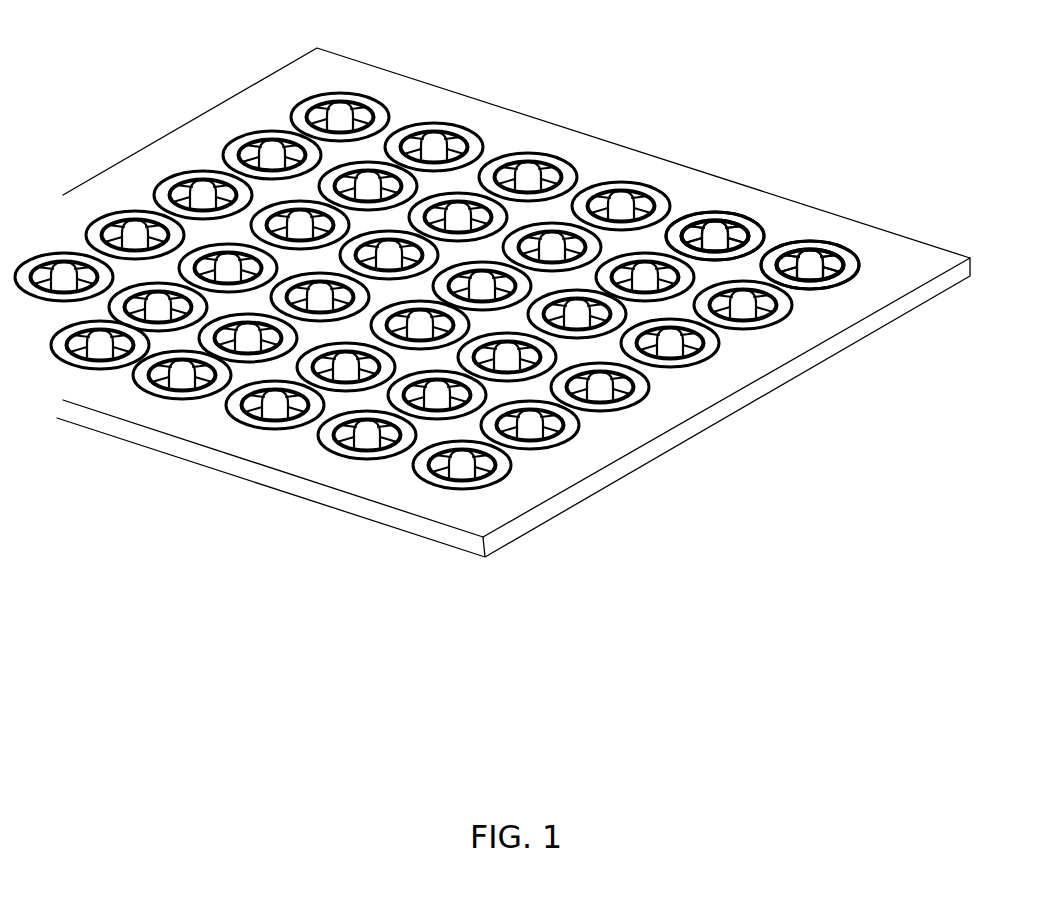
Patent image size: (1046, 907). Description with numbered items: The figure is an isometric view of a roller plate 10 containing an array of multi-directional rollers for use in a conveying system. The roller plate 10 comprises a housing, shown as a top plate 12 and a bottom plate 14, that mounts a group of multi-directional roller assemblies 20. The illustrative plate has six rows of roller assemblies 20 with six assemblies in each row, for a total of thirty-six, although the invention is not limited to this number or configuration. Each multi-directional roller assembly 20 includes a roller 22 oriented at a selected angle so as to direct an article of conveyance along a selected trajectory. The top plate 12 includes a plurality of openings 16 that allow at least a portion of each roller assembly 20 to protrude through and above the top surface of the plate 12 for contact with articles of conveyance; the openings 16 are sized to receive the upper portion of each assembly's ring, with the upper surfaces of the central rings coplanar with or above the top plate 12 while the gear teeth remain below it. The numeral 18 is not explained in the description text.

The roller plate 10 is at (728, 118).
The top plate 12 is at (913, 252).
The bottom plate 14 is at (913, 308).
The openings 16 is at (813, 282).
The annular rim 18 is at (753, 232).
The multi-directional roller assembly 20 is at (702, 223).
The roller 22 is at (435, 145).